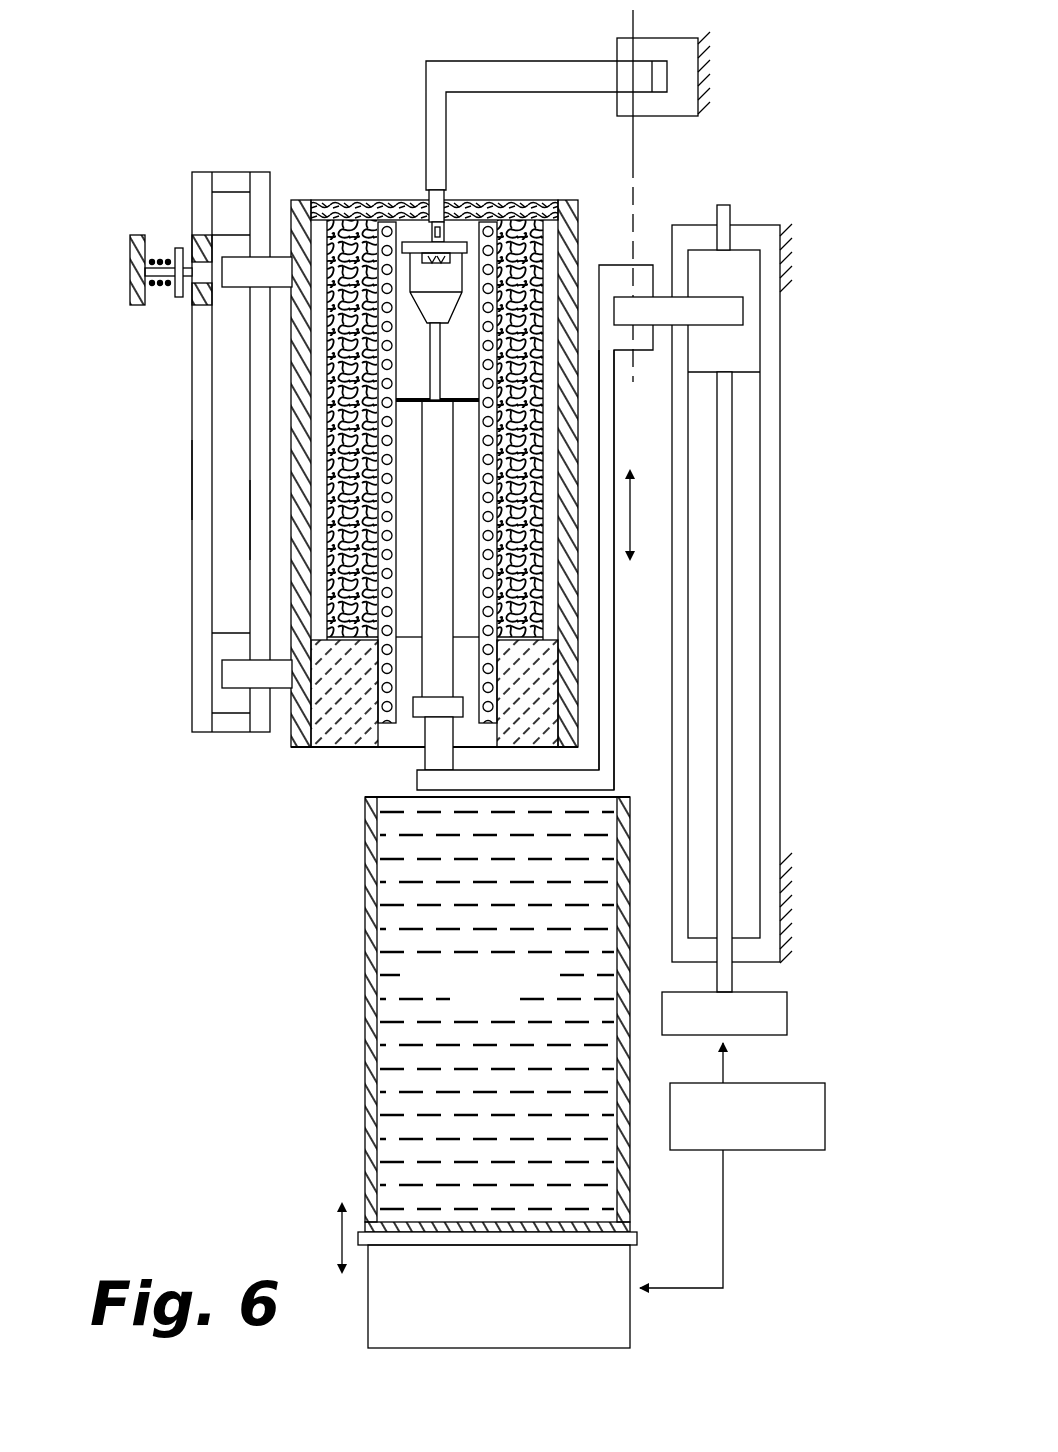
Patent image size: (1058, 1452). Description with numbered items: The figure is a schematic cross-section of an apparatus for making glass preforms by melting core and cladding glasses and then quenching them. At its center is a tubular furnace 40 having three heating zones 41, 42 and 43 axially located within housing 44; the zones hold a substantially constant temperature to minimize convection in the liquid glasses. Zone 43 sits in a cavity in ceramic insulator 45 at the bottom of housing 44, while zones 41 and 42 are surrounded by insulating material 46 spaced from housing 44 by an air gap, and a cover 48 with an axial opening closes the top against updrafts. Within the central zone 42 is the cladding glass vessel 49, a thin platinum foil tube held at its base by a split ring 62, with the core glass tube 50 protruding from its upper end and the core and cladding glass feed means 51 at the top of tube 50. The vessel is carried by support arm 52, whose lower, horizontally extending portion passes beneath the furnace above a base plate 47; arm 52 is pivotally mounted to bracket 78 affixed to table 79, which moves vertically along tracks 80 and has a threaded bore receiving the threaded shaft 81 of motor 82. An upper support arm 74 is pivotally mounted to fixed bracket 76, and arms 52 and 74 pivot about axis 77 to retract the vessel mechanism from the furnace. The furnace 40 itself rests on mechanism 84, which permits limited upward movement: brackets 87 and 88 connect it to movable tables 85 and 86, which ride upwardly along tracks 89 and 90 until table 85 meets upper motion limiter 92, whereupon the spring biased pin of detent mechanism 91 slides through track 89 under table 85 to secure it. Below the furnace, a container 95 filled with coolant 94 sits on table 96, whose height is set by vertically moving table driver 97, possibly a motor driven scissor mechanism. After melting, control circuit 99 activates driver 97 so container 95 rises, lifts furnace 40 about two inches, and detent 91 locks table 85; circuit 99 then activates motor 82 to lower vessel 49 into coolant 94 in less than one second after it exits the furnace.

The tubular furnace 40 is at (298, 748).
The furnace zone 41 is at (483, 205).
The central furnace zone 42 is at (367, 608).
The furnace zone 43 is at (496, 650).
The housing 44 is at (578, 210).
The ceramic insulator 45 is at (338, 750).
The insulating material 46 is at (350, 227).
The base plate 47 is at (417, 750).
The cover 48 is at (385, 217).
The cladding glass vessel 49 is at (440, 622).
The core glass tube 50 is at (440, 356).
The core and cladding glass feed means 51 is at (410, 220).
The support arm 52 is at (608, 728).
The split ring 62 is at (455, 707).
The support arm 74 is at (548, 68).
The fixed bracket 76 is at (673, 107).
The axis 77 is at (637, 148).
The bracket 78 is at (735, 311).
The table 79 is at (745, 355).
The tracks 80 is at (682, 445).
The piston rod 81 is at (725, 532).
The motor 82 is at (787, 1013).
The mechanism 84 is at (178, 413).
The moveable table 85 is at (228, 246).
The moveable table 86 is at (224, 647).
The bracket 87 is at (243, 275).
The bracket 88 is at (240, 674).
The track 89 is at (204, 476).
The track 90 is at (260, 514).
The detent mechanism 91 is at (160, 306).
The upper motion limiter 92 is at (237, 182).
The coolant 94 is at (497, 1010).
The container 95 is at (374, 910).
The table 96 is at (638, 1238).
The vertically moving table driver 97 is at (499, 1296).
The control circuit 99 is at (825, 1115).